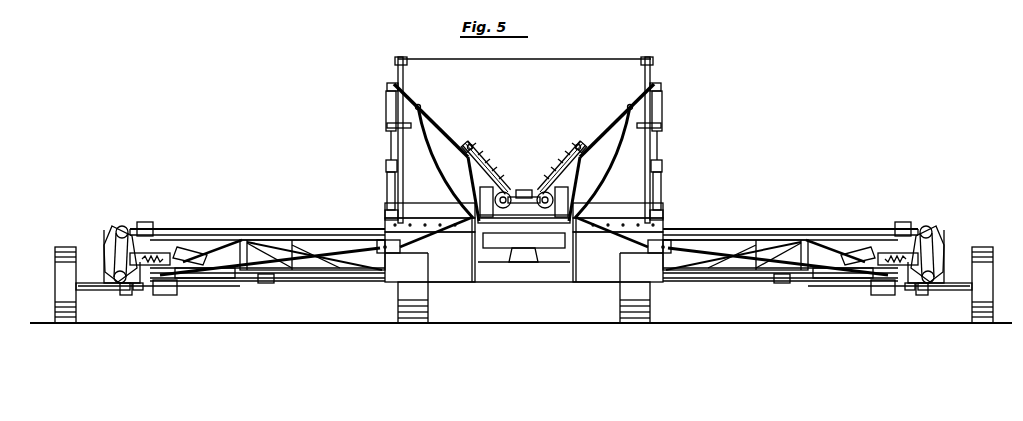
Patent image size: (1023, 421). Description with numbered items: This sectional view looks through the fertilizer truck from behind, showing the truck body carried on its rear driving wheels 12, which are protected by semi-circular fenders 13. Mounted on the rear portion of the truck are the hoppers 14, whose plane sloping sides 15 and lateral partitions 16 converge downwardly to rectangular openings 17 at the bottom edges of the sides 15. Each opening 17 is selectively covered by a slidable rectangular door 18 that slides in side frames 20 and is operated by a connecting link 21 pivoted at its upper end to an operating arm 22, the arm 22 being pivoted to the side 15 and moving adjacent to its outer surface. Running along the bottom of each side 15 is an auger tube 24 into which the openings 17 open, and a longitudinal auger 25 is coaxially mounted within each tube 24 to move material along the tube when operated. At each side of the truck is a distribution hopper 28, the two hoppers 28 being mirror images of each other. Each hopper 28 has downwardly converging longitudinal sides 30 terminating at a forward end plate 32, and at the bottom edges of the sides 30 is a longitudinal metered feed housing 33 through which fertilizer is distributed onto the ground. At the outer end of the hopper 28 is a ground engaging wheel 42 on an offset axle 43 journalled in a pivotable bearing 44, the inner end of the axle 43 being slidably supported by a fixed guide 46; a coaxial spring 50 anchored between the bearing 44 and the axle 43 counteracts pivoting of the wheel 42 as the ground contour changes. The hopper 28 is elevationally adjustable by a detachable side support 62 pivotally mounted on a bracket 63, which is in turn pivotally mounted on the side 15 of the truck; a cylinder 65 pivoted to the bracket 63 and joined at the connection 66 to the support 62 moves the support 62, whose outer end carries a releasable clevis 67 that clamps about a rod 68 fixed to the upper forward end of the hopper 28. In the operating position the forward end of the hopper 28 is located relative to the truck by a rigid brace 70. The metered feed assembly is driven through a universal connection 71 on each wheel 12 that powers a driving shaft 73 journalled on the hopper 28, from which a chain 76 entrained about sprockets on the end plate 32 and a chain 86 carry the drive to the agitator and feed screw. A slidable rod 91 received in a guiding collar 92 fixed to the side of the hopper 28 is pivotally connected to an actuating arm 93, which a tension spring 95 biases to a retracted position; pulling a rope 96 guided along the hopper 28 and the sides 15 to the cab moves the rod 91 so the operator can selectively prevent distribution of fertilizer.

The rear driving wheels 12 is at (422, 296).
The semi-circular fenders 13 is at (412, 210).
The hoppers 14 is at (580, 60).
The sloping sides 15 is at (437, 119).
The lateral partitions 16 is at (531, 107).
The openings 17 is at (523, 190).
The slidable rectangular doors 18 is at (486, 162).
The side frames 20 is at (524, 201).
The connecting link 21 is at (473, 146).
The operating arm 22 is at (468, 145).
The auger tube 24 is at (524, 208).
The longitudinal auger 25 is at (504, 190).
The distribution hopper 28 is at (275, 228).
The longitudinal sides 30 is at (230, 258).
The forward end plate 32 is at (114, 240).
The metered feed housing 33 is at (343, 276).
The ground engaging wheel 42 is at (62, 262).
The offset axle 43 is at (108, 291).
The bearing 44 is at (125, 295).
The fixed guide 46 is at (165, 295).
The coaxial spring 50 is at (139, 290).
The detachable side support 62 is at (387, 190).
The bracket 63 is at (386, 87).
The cylinder 65 is at (385, 107).
The connection 66 is at (386, 165).
The releasable clevis 67 is at (385, 214).
The rod 68 is at (141, 222).
The rigid brace 70 is at (298, 288).
The universal connection 71 is at (363, 280).
The driving shaft 73 is at (245, 284).
The chain 76 is at (106, 256).
The chain 86 is at (121, 226).
The slidable rod 91 is at (200, 279).
The guiding collar 92 is at (180, 250).
The actuating arm 93 is at (192, 257).
The tension spring 95 is at (152, 258).
The rope 96 is at (433, 158).